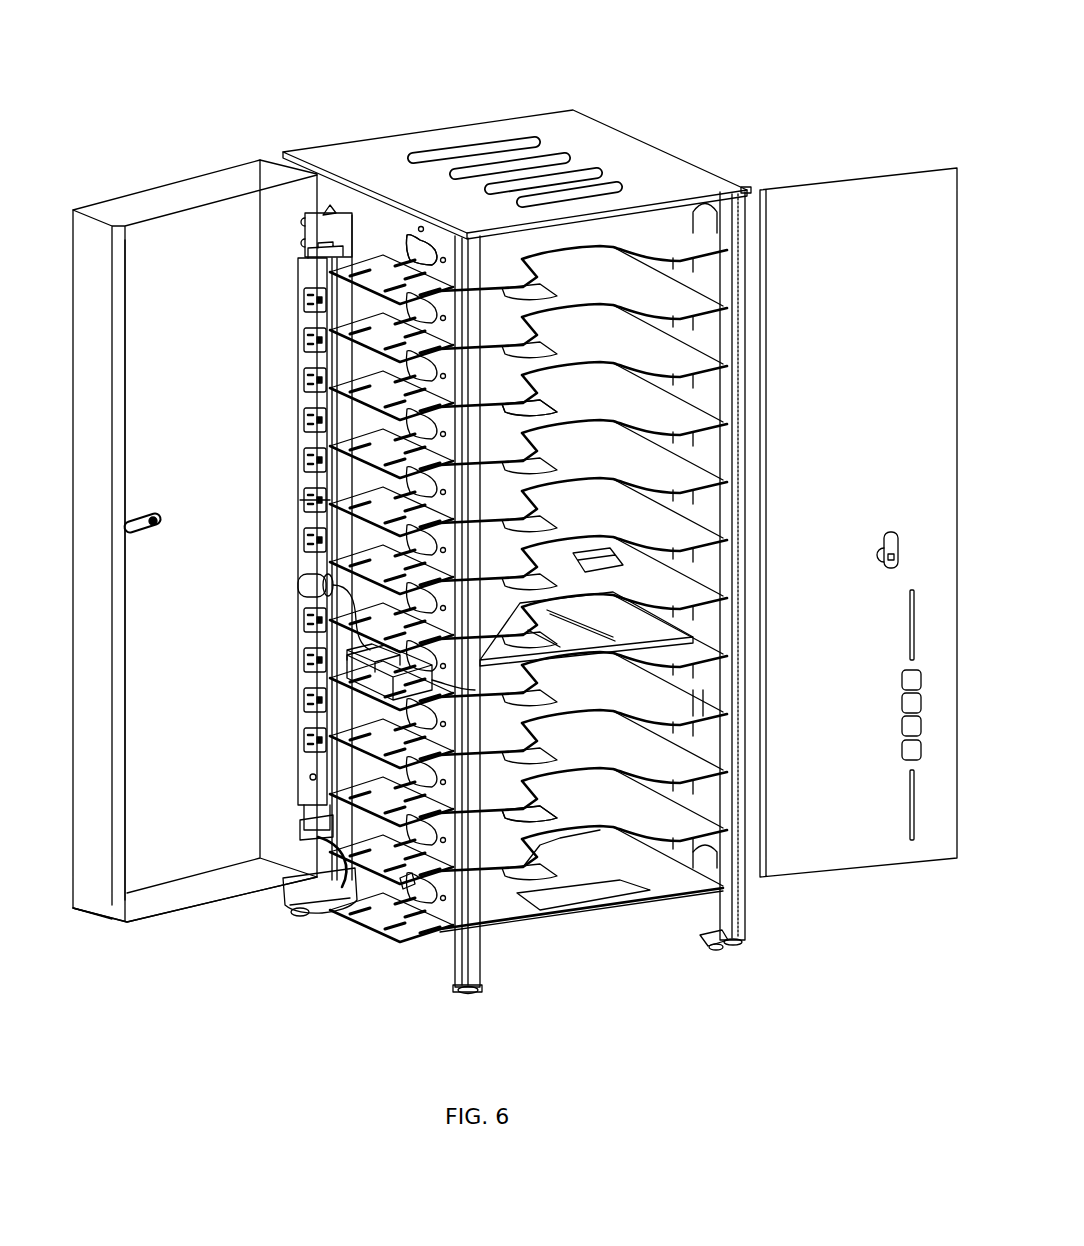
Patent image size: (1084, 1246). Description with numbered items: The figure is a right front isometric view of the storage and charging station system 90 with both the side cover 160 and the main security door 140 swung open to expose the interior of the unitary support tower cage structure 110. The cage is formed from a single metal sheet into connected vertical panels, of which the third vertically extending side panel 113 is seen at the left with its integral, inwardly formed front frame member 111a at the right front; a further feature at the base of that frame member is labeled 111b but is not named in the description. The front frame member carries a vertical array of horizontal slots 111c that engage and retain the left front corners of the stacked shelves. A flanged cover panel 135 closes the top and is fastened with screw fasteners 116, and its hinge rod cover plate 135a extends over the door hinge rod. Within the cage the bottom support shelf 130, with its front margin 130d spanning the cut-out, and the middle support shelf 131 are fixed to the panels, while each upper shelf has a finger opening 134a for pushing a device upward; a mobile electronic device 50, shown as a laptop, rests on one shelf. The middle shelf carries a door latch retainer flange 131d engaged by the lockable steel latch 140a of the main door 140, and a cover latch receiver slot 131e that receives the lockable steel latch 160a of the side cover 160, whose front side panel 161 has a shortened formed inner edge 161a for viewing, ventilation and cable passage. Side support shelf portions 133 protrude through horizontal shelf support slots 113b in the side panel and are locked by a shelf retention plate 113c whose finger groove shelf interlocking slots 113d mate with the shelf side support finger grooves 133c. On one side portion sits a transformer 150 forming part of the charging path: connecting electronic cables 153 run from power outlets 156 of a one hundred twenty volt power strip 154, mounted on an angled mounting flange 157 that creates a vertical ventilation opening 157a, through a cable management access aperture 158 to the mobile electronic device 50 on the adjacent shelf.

The storage and charging station system 90 is at (426, 43).
The unitary support tower cage structure 110 is at (577, 110).
The cover panel 135 is at (373, 135).
The hinge rod cover plate 135a is at (747, 188).
The third vertically extending side panel 113 is at (358, 225).
The horizontal shelf support slots 113b is at (478, 929).
The shelf retention plate 113c is at (450, 935).
The finger groove shelf interlocking slots 113d is at (405, 883).
The front frame member 111a is at (735, 936).
The right post foot 111b is at (708, 938).
The horizontal slots 111c is at (697, 713).
The screw fasteners 116 is at (421, 228).
The power outlets 156 is at (327, 428).
The side cover 160 is at (141, 192).
The lockable steel latch 160a is at (138, 536).
The front side panel 161 is at (88, 896).
The shortened formed inner edge 161a is at (127, 688).
The main security door 140 is at (868, 176).
The lockable steel latch 140a is at (887, 532).
The middle support shelf 131 is at (576, 532).
The finger opening 134a is at (540, 408).
The door latch retainer flange 131d is at (623, 569).
The cover latch receiver slot 131e is at (300, 588).
The bottom support shelf 130 is at (563, 862).
The front margin 130d is at (645, 898).
The mobile electronic device 50 is at (580, 641).
The side support shelf portions 133 is at (345, 408).
The shelf side support finger grooves 133c is at (313, 503).
The power strip 154 is at (300, 273).
The angled mounting flange 157 is at (303, 234).
The vertical ventilation opening 157a is at (332, 212).
The cable management access aperture 158 is at (403, 885).
The transformer 150 is at (380, 683).
The connecting electronic cables 153 is at (338, 591).